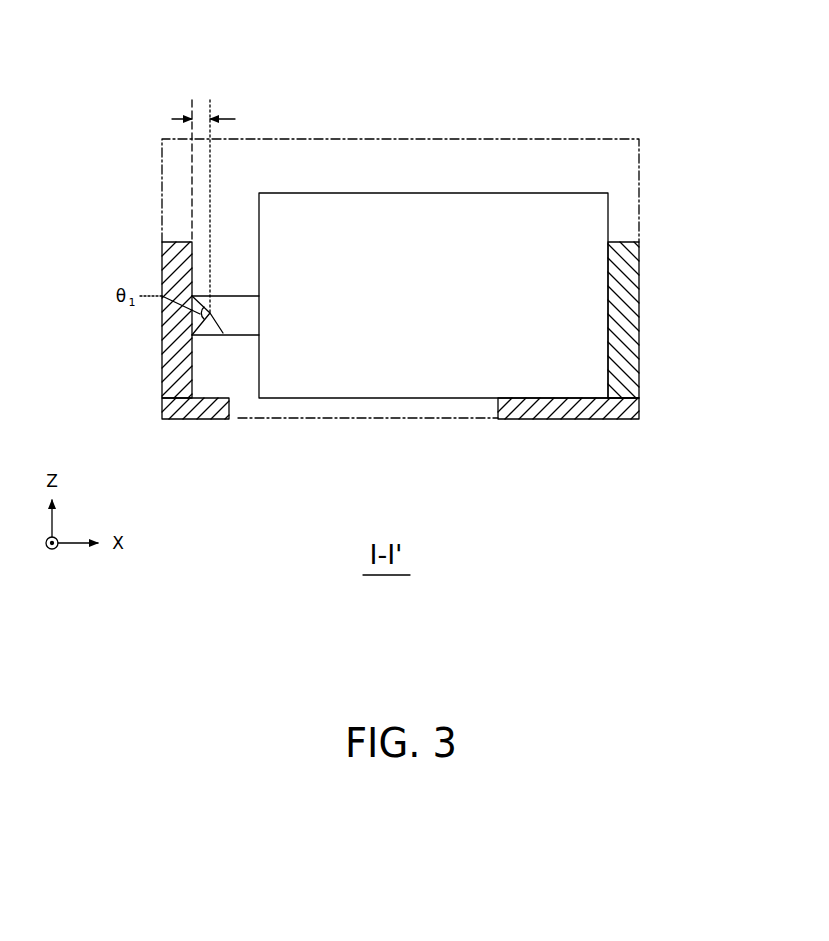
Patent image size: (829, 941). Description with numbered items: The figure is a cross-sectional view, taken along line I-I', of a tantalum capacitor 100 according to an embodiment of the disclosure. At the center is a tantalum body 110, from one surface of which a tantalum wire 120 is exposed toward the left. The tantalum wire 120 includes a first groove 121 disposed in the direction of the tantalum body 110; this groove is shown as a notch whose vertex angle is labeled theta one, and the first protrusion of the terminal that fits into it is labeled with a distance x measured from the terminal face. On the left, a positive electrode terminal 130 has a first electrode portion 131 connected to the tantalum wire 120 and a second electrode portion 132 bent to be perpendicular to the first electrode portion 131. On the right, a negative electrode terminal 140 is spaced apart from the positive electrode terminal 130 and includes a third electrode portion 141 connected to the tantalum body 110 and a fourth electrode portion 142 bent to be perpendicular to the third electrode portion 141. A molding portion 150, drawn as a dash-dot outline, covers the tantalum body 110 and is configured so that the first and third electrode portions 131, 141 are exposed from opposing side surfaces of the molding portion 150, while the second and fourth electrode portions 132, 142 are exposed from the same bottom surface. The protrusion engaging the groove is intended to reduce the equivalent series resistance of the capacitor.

The tantalum capacitor 100 is at (327, 39).
The tantalum body 110 is at (583, 212).
The tantalum wire 120 is at (233, 317).
The first groove 121 is at (210, 313).
The positive electrode terminal 130 is at (181, 428).
The first electrode portion 131 is at (161, 394).
The second electrode portion 132 is at (216, 414).
The negative electrode terminal 140 is at (620, 430).
The third electrode portion 141 is at (627, 305).
The fourth electrode portion 142 is at (587, 419).
The molding portion 150 is at (577, 128).